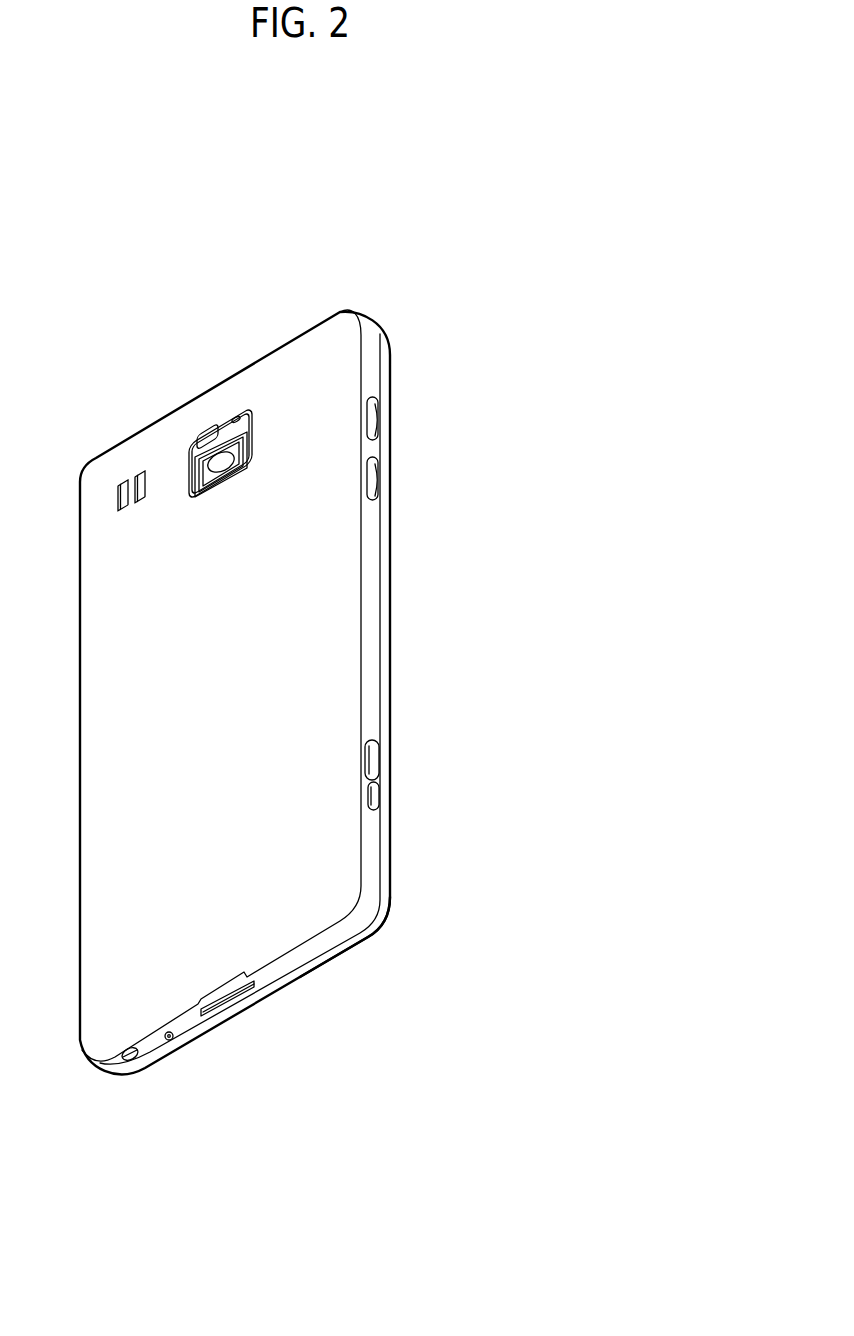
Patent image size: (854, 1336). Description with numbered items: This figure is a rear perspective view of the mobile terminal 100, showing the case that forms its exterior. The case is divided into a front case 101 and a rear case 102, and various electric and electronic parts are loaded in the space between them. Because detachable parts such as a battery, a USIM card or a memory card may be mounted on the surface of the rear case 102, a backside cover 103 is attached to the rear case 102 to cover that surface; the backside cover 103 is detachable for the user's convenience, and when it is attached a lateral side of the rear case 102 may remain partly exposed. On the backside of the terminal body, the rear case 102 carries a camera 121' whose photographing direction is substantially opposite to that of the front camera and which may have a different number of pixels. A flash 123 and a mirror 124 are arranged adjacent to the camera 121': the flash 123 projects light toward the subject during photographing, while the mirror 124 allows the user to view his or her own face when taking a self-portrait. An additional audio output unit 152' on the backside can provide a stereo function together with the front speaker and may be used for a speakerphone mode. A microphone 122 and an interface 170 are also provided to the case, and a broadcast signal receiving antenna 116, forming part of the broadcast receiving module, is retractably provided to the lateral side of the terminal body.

The mobile terminal 100 is at (437, 226).
The front case 101 is at (373, 930).
The rear case 102 is at (372, 333).
The backside cover 103 is at (333, 885).
The broadcast signal receiving antenna 116 is at (128, 1060).
The camera 121' is at (225, 396).
The microphone 122 is at (169, 1040).
The flash 123 is at (240, 418).
The mirror 124 is at (203, 432).
The additional audio output unit 152' is at (110, 436).
The interface 170 is at (237, 1000).